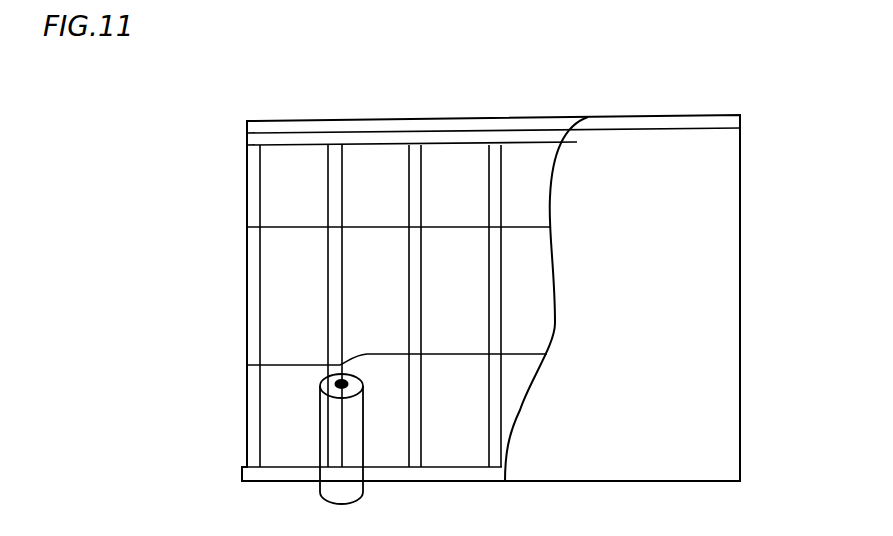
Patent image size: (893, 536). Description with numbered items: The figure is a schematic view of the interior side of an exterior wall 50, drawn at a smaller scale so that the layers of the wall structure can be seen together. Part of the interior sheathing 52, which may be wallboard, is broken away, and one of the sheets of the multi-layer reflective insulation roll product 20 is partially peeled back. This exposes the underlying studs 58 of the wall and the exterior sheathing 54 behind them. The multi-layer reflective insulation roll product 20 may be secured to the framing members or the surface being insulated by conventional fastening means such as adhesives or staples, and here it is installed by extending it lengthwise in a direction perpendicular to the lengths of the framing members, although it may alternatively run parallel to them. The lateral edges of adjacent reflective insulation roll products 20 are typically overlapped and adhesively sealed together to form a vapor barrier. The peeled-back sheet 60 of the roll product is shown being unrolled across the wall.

The exterior wall 50 is at (187, 393).
The multi-layer reflective insulation roll product 20 is at (468, 201).
The studs 58 is at (340, 218).
The interior sheathing 52 is at (623, 290).
The unrolled membrane sheet 60 is at (283, 390).
The exterior sheathing 54 is at (302, 436).